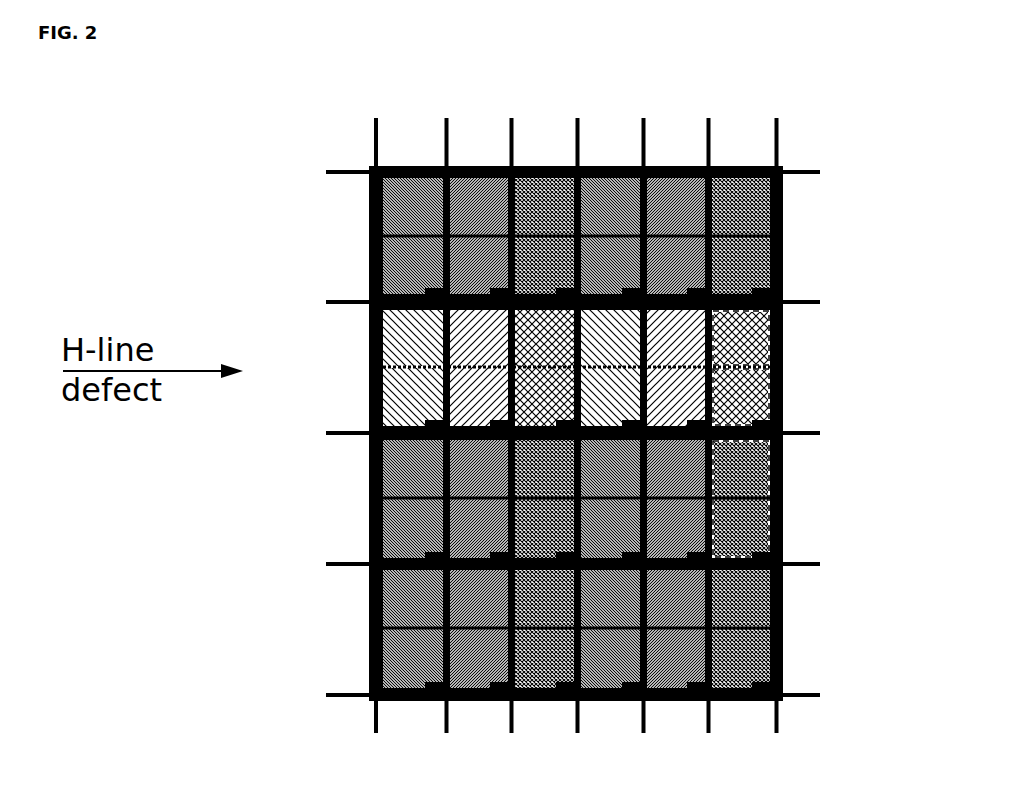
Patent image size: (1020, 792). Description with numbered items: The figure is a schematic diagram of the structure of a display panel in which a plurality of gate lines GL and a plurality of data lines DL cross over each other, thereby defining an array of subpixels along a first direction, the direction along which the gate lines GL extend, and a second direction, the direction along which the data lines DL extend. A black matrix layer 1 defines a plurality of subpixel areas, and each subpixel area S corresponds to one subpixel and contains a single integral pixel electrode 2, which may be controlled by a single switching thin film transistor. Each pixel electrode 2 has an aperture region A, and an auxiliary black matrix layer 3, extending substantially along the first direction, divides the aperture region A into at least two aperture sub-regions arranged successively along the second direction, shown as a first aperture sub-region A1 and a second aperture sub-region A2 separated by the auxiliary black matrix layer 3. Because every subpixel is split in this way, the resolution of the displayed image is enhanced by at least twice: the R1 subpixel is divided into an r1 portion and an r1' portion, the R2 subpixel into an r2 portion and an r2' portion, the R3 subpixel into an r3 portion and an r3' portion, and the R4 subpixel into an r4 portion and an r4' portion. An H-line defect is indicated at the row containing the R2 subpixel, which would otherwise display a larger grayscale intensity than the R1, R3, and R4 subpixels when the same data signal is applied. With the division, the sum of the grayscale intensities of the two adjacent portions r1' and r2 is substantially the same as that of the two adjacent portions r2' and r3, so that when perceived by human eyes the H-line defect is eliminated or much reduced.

The R1 subpixel R1 is at (563, 236).
The R2 subpixel R2 is at (586, 368).
The R3 subpixel R3 is at (573, 499).
The R4 subpixel R4 is at (522, 629).
The r1 portion r1 is at (413, 206).
The r1' portion r1' is at (413, 265).
The r2 portion r2 is at (413, 338).
The r2' portion r2' is at (413, 397).
The r3 portion r3 is at (413, 468).
The r3' portion r3' is at (413, 528).
The r4 portion r4 is at (413, 598).
The r4' portion r4' is at (413, 658).
The gate line GL is at (545, 433).
The data line DL is at (576, 418).
The black matrix layer 1 is at (775, 213).
The pixel electrode 2 is at (760, 255).
The auxiliary black matrix layer 3 is at (762, 228).
The aperture region A is at (804, 368).
The first aperture sub-region A1 is at (762, 325).
The second aperture sub-region A2 is at (762, 388).
The subpixel area S is at (762, 468).